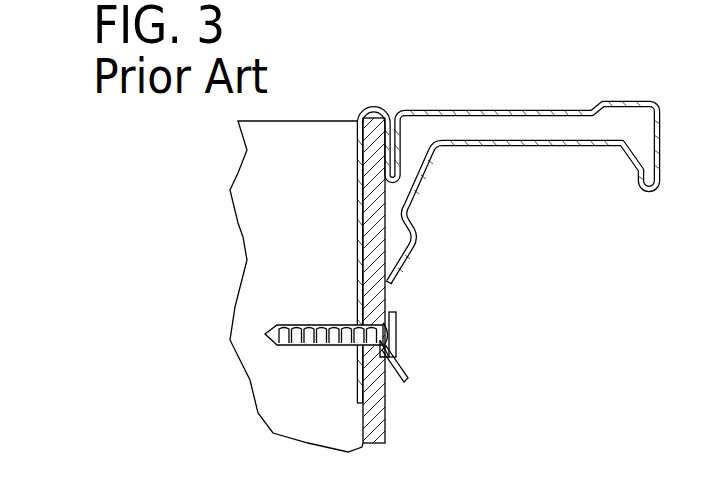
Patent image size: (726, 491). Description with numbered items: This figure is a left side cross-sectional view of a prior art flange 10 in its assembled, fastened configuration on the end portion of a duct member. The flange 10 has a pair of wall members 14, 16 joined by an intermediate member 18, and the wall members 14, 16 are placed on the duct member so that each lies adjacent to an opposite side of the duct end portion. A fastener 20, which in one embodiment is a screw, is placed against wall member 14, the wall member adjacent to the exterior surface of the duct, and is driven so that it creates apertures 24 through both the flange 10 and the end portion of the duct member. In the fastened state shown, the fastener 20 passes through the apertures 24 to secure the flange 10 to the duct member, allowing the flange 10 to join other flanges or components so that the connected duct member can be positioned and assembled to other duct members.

The flange 10 is at (580, 229).
The wall member 14 is at (390, 312).
The wall member 16 is at (357, 225).
The intermediate member 18 is at (372, 107).
The fastener 20 is at (297, 345).
The apertures 24 is at (358, 322).